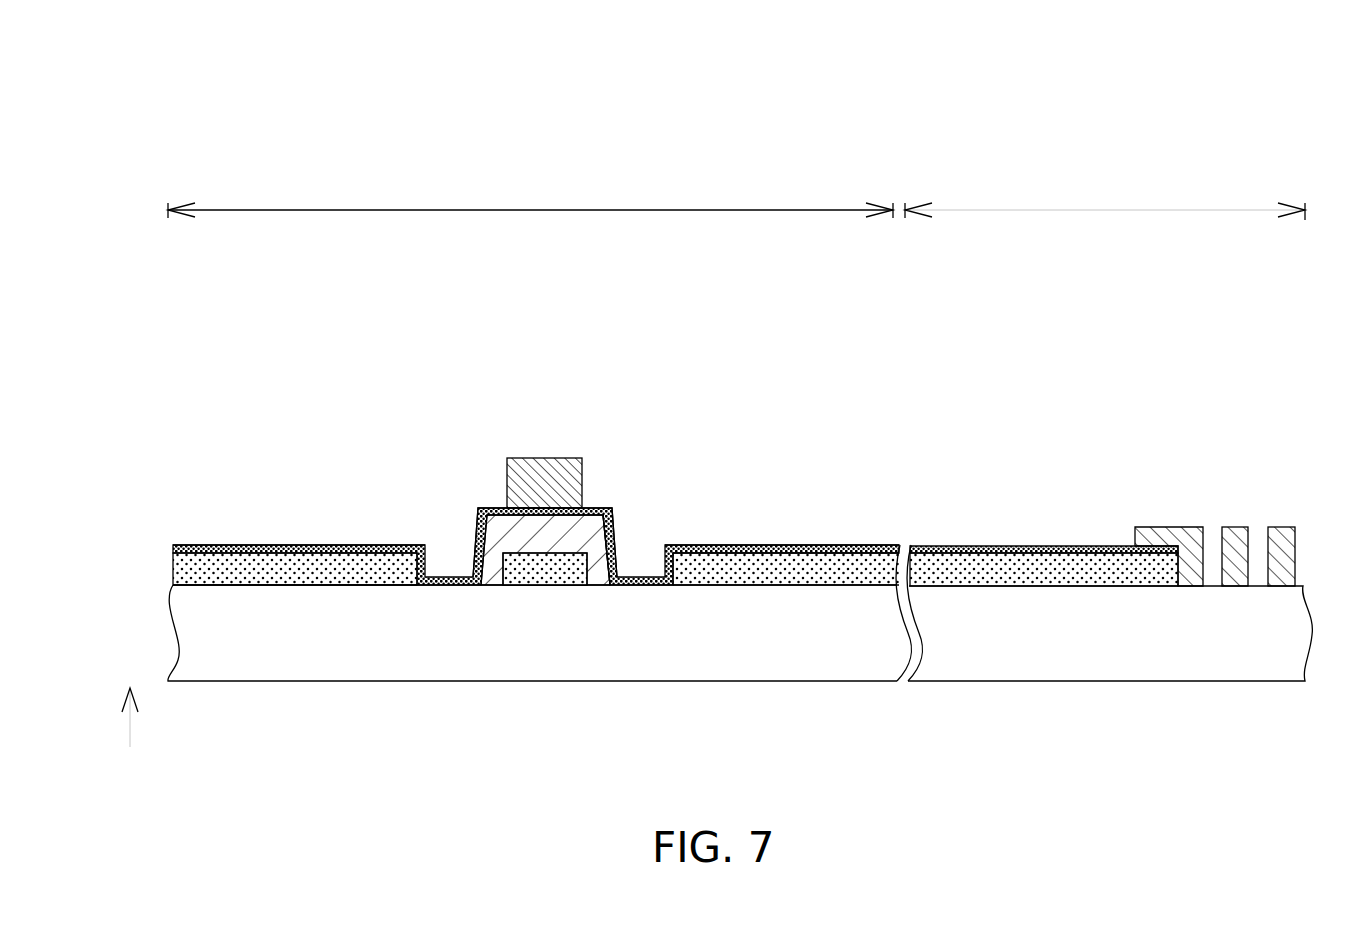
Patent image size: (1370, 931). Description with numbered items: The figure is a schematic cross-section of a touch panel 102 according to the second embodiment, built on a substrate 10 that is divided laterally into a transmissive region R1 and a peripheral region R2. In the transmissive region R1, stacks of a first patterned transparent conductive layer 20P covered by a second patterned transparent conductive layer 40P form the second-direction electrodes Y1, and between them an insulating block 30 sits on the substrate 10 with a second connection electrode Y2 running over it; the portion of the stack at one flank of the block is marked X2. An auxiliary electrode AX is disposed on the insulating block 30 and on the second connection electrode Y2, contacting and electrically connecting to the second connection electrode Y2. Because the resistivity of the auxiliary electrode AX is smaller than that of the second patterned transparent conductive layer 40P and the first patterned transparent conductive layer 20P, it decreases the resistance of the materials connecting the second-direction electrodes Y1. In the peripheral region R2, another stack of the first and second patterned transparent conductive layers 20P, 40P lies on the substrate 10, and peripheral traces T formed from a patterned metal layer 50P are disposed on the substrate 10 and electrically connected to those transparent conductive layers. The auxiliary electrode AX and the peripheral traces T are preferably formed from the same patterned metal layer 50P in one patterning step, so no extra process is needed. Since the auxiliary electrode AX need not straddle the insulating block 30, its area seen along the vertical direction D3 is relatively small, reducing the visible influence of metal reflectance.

The touch panel 102 is at (1218, 128).
The transmissive region R1 is at (530, 195).
The peripheral region R2 is at (1105, 196).
The second-direction electrodes Y1 is at (368, 428).
The second connection electrode Y2 is at (496, 508).
The auxiliary electrode AX is at (550, 483).
The second pattern X2 is at (588, 546).
The insulating block 30 is at (498, 543).
The second patterned transparent conductive layer 40P is at (218, 550).
The first patterned transparent conductive layer 20P is at (315, 572).
The patterned metal layer 50P is at (1235, 548).
The peripheral traces T is at (1297, 428).
The substrate 10 is at (388, 660).
The vertical direction D3 is at (133, 704).